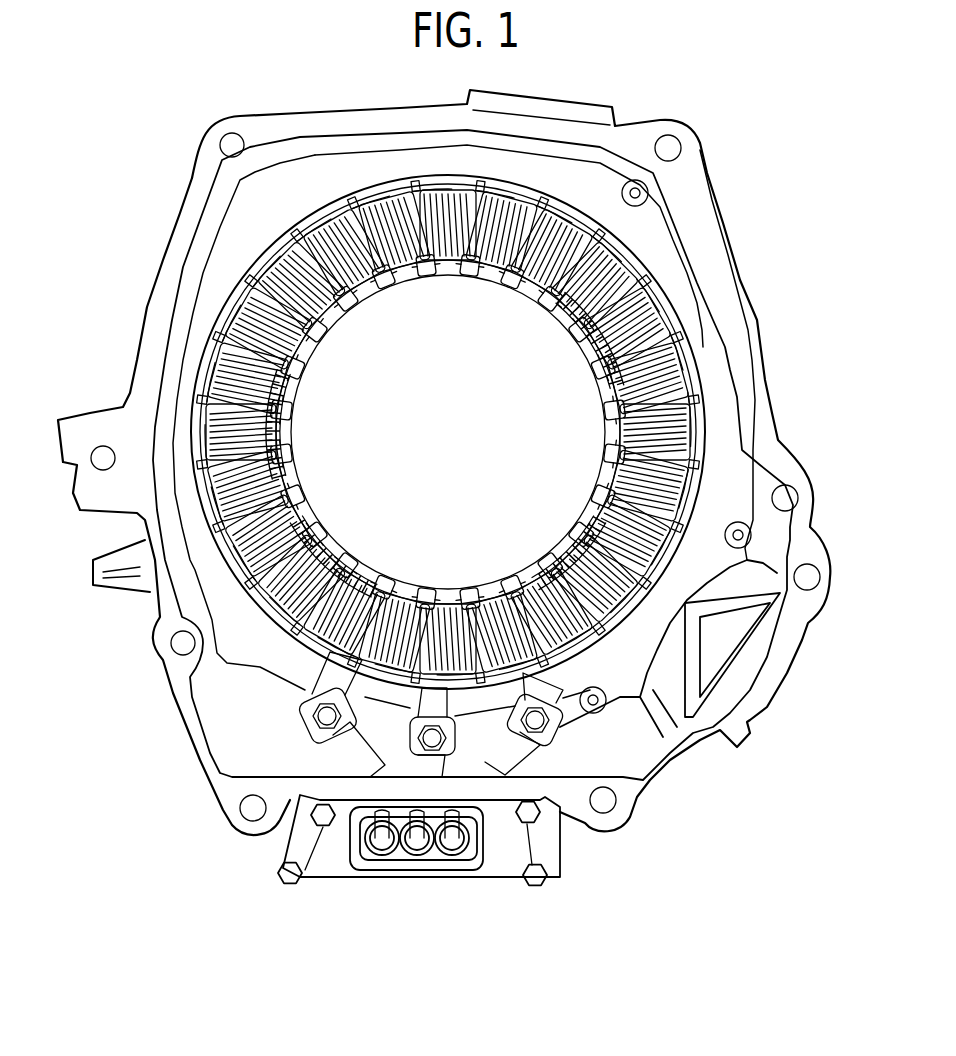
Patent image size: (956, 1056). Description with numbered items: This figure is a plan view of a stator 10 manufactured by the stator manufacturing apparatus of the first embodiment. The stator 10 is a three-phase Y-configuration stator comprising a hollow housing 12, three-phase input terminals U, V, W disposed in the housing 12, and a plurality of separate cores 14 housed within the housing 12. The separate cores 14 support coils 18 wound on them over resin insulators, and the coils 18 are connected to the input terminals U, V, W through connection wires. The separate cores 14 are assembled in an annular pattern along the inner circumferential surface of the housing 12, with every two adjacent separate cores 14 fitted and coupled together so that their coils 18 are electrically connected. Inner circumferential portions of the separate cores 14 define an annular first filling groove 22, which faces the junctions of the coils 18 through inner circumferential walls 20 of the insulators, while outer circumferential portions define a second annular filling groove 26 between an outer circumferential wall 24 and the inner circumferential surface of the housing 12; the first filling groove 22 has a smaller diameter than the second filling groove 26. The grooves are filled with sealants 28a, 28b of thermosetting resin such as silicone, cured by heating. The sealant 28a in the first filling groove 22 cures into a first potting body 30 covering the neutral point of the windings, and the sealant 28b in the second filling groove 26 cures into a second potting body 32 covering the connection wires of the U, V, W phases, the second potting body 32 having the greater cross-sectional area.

The stator 10 is at (444, 486).
The housing 12 is at (748, 445).
The separate cores 14 is at (401, 432).
The coils 18 is at (448, 432).
The inner circumferential walls 20 is at (368, 290).
The first filling groove 22 is at (300, 368).
The outer circumferential wall 24 is at (278, 250).
The second filling groove 26 is at (203, 372).
The sealant 28a is at (445, 445).
The first potting body 30 is at (268, 455).
The sealant 28b is at (401, 432).
The second potting body 32 is at (227, 317).
The input terminal U is at (327, 717).
The input terminal V is at (432, 738).
The input terminal W is at (540, 727).